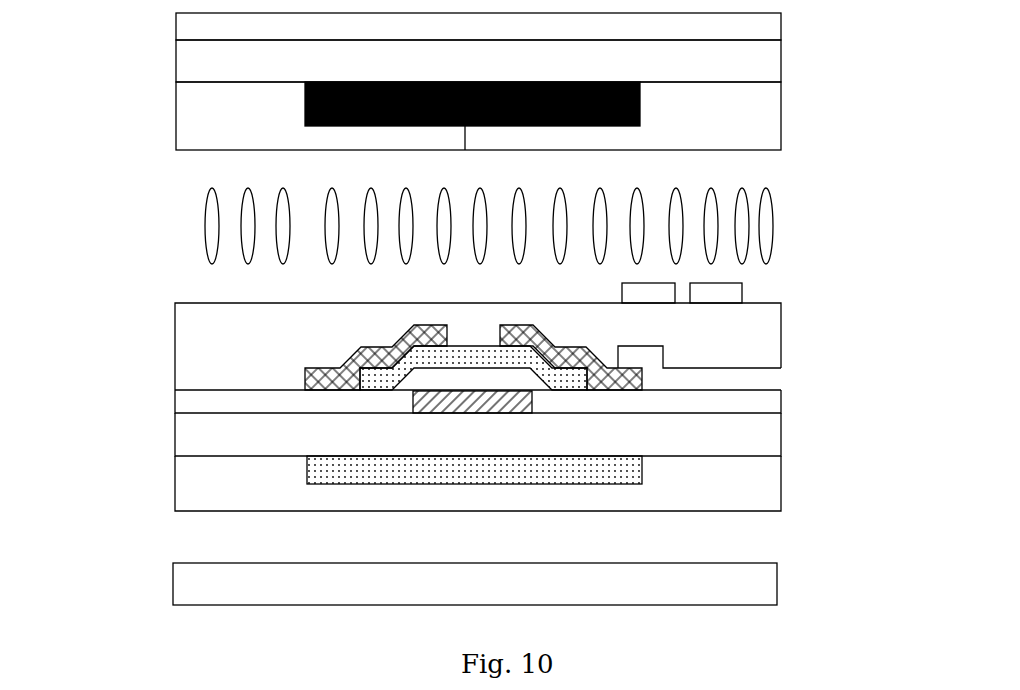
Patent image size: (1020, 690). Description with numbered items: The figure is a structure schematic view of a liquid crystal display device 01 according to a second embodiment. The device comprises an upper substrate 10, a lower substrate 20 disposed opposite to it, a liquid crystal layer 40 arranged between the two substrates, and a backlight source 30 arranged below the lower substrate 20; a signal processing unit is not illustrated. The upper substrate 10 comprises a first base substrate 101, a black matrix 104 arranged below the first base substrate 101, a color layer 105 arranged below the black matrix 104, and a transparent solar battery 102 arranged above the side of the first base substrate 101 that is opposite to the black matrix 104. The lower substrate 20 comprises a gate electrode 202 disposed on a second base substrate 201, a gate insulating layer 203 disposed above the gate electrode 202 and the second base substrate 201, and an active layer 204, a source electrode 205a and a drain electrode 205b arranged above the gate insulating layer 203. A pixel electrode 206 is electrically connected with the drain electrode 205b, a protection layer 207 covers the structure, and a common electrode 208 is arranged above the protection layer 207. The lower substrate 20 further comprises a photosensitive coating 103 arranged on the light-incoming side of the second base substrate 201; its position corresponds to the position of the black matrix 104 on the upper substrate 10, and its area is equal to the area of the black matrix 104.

The liquid crystal display device 01 is at (146, 607).
The upper substrate 10 is at (542, 81).
The transparent solar battery 102 is at (737, 23).
The first base substrate 101 is at (737, 55).
The black matrix 104 is at (640, 108).
The color layer 105 is at (713, 136).
The liquid crystal layer 40 is at (768, 218).
The lower substrate 20 is at (542, 396).
The common electrode 208 is at (737, 295).
The protection layer 207 is at (737, 326).
The pixel electrode 206 is at (737, 377).
The source electrode 205a is at (335, 373).
The drain electrode 205b is at (552, 360).
The active layer 204 is at (390, 366).
The gate insulating layer 203 is at (737, 401).
The gate electrode 202 is at (479, 393).
The second base substrate 201 is at (737, 435).
The photosensitive coating 103 is at (642, 469).
The backlight source 30 is at (735, 580).